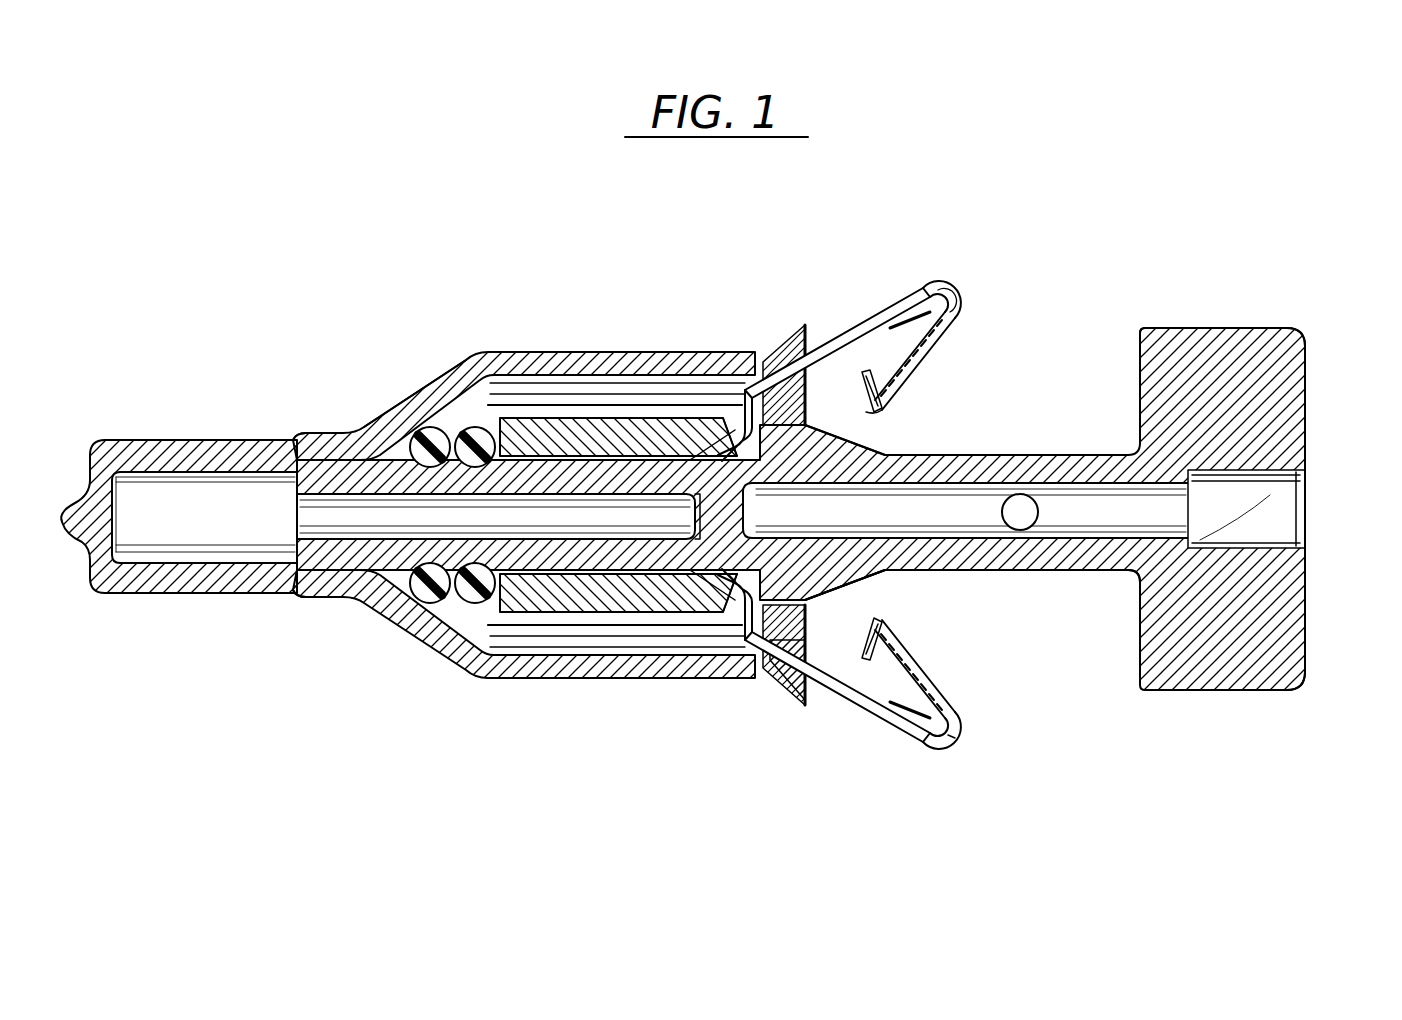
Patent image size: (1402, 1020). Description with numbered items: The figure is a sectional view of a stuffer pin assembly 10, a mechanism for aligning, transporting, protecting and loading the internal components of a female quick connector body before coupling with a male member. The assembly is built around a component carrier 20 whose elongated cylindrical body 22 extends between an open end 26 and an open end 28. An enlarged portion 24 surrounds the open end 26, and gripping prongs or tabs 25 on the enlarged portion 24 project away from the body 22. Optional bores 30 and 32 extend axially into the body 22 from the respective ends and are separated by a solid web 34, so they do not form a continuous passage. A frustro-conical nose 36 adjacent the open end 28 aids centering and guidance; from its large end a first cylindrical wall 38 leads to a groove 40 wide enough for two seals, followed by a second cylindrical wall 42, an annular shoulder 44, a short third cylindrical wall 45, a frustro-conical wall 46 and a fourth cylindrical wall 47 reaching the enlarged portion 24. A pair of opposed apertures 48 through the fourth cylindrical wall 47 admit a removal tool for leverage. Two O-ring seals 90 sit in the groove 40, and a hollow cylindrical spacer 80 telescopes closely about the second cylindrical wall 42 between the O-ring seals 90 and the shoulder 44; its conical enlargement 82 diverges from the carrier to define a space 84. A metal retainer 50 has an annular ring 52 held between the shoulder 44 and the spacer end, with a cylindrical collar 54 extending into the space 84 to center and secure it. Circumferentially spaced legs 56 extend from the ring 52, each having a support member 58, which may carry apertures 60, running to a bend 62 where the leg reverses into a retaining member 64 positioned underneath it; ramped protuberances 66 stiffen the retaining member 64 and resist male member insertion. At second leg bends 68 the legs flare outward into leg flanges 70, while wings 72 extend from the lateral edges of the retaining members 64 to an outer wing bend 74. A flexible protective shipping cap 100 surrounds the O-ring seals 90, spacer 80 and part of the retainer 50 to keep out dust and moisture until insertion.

The stuffer pin assembly 10 is at (298, 258).
The component carrier 20 is at (1136, 696).
The elongated cylindrical body 22 is at (1093, 446).
The enlarged portion 24 is at (1137, 352).
The gripping prongs or tabs 25 is at (1260, 350).
The open end 26 is at (1272, 493).
The open end 28 is at (290, 497).
The bore 30 is at (952, 502).
The bore 32 is at (338, 542).
The solid web 34 is at (706, 565).
The frustro-conical nose 36 is at (300, 458).
The first cylindrical wall 38 is at (352, 432).
The groove 40 is at (392, 430).
The second cylindrical wall 42 is at (565, 450).
The annular shoulder 44 is at (866, 318).
The third cylindrical wall 45 is at (812, 622).
The frustro-conical wall 46 is at (863, 576).
The fourth cylindrical wall 47 is at (1113, 567).
The apertures 48 is at (1020, 531).
The retainer 50 is at (775, 356).
The annular ring 52 is at (752, 388).
The cylindrical collar 54 is at (722, 675).
The legs 56 is at (949, 742).
The support member 58 is at (843, 695).
The apertures 60 is at (848, 333).
The bends 62 is at (938, 290).
The retaining member 64 is at (950, 325).
The ramped protuberances 66 is at (925, 358).
The second leg bends 68 is at (895, 388).
The leg flanges 70 is at (857, 387).
The wings 72 is at (947, 688).
The outer wing bend 74 is at (955, 300).
The spacer 80 is at (627, 425).
The conical enlargement 82 is at (700, 420).
The space 84 is at (712, 412).
The O-ring seals 90 is at (470, 604).
The protective cover or shipping cap 100 is at (122, 595).